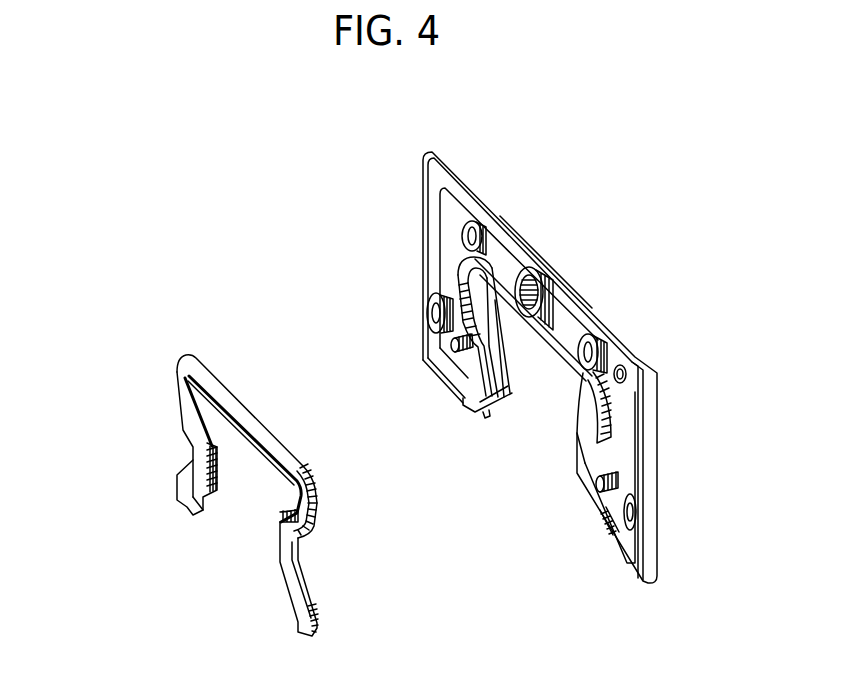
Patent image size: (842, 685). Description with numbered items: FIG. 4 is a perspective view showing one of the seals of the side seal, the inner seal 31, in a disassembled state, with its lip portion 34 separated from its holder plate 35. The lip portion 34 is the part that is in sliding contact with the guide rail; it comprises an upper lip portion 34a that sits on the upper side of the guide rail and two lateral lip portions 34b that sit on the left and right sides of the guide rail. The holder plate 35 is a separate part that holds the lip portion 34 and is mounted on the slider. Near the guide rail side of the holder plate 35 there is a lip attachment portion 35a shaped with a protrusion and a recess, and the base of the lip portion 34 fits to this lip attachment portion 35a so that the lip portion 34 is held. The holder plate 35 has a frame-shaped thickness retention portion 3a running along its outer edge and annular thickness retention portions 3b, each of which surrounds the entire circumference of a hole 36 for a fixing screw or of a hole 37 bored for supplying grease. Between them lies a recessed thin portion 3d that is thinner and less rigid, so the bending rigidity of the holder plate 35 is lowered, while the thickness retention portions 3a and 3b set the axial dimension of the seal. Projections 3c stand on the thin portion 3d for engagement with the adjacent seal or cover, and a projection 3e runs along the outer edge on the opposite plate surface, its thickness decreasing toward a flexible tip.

The inner seal 31 is at (444, 90).
The lip portion 34 is at (178, 346).
The upper lip portion 34a is at (248, 410).
The lateral lip portions 34b is at (199, 452).
The holder plate 35 is at (648, 346).
The lip attachment portion 35a is at (488, 410).
The hole 36 is at (476, 237).
The hole 37 is at (530, 294).
The thickness retention portion 3a is at (423, 197).
The thickness retention portion 3b is at (472, 237).
The projections 3c is at (453, 345).
The thin portion 3d is at (625, 407).
The projection 3e is at (573, 292).